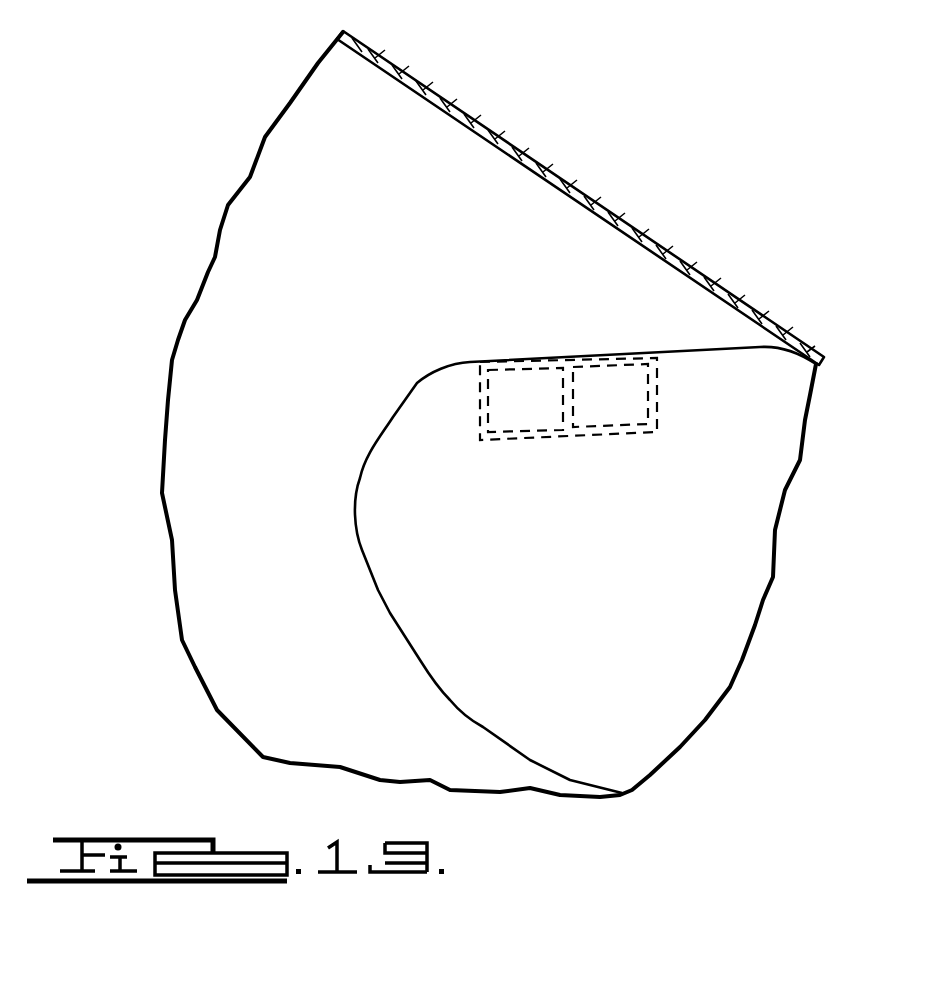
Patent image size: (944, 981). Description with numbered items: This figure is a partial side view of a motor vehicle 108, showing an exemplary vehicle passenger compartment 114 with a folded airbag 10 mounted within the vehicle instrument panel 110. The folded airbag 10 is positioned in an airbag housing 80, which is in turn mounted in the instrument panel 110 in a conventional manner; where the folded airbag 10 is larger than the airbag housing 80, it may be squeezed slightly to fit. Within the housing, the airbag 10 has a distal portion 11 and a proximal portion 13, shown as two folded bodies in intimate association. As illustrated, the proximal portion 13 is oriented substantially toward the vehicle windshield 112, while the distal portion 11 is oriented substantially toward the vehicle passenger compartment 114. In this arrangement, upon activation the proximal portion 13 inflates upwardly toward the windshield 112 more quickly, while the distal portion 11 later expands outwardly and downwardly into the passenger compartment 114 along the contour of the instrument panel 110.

The airbag 10 is at (548, 460).
The distal portion 11 is at (519, 385).
The proximal portion 13 is at (614, 383).
The airbag housing 80 is at (658, 395).
The motor vehicle 108 is at (756, 625).
The vehicle instrument panel 110 is at (388, 612).
The vehicle windshield 112 is at (524, 166).
The vehicle passenger compartment 114 is at (305, 333).